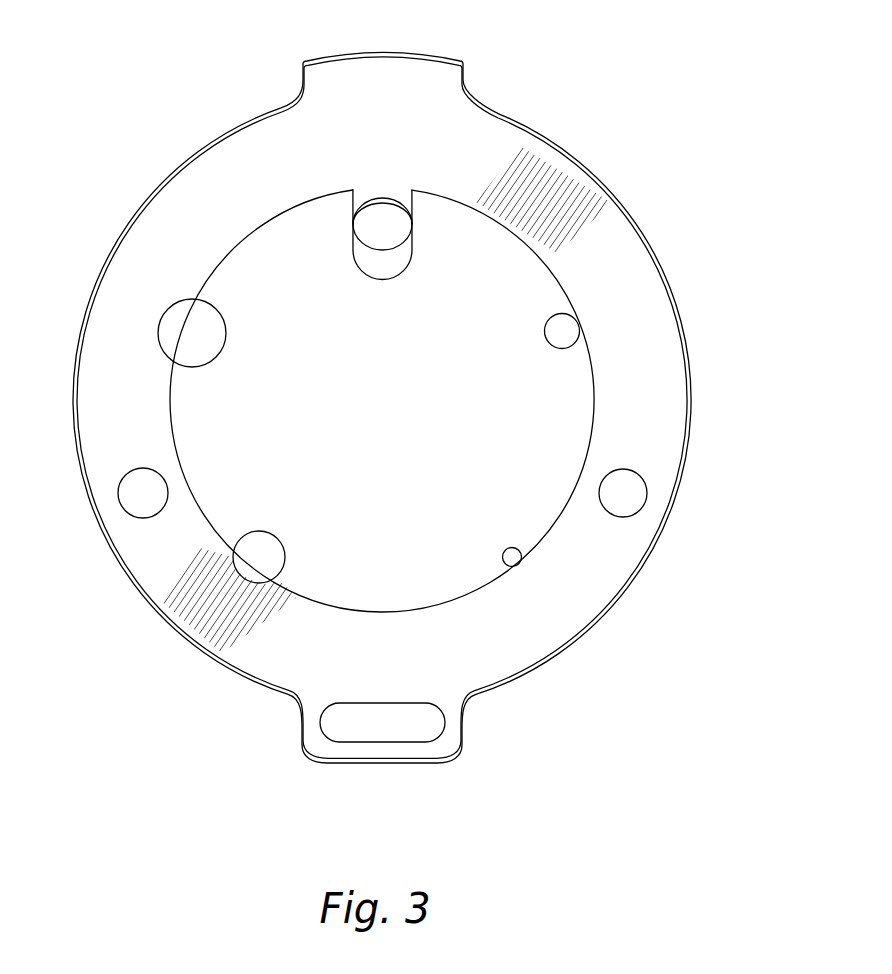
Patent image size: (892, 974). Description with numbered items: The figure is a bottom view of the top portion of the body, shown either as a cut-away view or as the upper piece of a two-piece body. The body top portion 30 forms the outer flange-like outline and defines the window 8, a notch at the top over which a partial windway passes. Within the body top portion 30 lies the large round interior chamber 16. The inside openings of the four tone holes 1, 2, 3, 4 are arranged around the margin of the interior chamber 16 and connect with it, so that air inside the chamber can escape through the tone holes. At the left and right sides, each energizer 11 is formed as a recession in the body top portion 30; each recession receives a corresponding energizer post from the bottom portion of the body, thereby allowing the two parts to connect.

The tone hole 1 is at (563, 330).
The tone hole 2 is at (172, 325).
The tone hole 3 is at (259, 557).
The tone hole 4 is at (510, 557).
The window 8 is at (385, 223).
The energizer 11 is at (143, 492).
The interior chamber 16 is at (477, 413).
The body top portion 30 is at (233, 178).